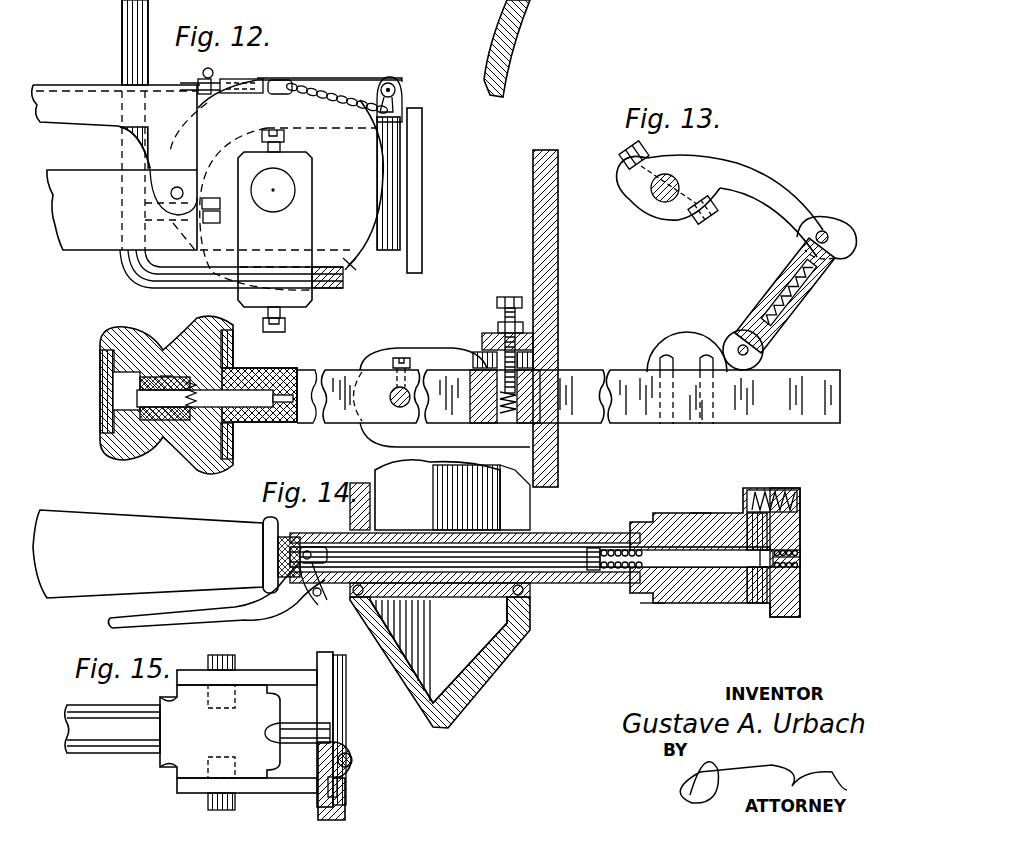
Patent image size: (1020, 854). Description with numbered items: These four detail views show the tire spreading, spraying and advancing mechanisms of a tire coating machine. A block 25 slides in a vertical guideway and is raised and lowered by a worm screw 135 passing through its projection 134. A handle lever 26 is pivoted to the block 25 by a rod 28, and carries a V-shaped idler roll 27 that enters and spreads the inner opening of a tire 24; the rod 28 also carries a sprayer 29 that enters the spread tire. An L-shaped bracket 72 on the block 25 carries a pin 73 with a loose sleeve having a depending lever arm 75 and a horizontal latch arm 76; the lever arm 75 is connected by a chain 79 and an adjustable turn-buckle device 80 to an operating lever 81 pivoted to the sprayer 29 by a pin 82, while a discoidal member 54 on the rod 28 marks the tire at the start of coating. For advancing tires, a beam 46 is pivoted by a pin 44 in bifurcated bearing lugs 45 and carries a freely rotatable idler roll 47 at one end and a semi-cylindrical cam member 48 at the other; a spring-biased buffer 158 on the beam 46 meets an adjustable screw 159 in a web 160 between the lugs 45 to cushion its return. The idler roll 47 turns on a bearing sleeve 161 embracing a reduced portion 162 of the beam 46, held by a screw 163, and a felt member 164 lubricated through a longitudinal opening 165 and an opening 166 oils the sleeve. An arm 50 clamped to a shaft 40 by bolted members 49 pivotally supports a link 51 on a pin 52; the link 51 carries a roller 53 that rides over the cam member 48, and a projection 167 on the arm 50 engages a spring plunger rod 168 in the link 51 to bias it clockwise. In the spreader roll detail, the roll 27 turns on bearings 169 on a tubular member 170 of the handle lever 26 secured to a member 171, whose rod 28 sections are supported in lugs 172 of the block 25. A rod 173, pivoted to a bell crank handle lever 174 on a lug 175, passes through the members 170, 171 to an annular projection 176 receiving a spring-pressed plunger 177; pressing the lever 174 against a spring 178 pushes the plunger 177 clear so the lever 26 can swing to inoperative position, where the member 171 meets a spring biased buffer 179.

In FIG. 12, the operating lever 81 is at (82, 85).
In FIG. 12, the sprayer 29 is at (70, 168).
In FIG. 12, the pin 82 is at (170, 193).
In FIG. 12, the rod 28 is at (290, 190).
In FIG. 14, the rod 28 is at (702, 512).
In FIG. 15, the rod 28 is at (235, 661).
In FIG. 12, the block 25 is at (400, 175).
In FIG. 14, the block 25 is at (802, 606).
In FIG. 15, the block 25 is at (280, 680).
In FIG. 12, the bracket 72 is at (400, 118).
In FIG. 12, the pin 73 is at (392, 84).
In FIG. 12, the lever arm 75 is at (378, 92).
In FIG. 12, the latch arm 76 is at (318, 80).
In FIG. 12, the chain 79 is at (323, 100).
In FIG. 12, the turn-buckle device 80 is at (240, 79).
In FIG. 12, the discoidal member 54 is at (352, 266).
In FIG. 12, the tire 24 is at (527, 33).
In FIG. 13, the beam 46 is at (340, 375).
In FIG. 13, the bearing lugs 45 is at (426, 356).
In FIG. 13, the pin 44 is at (390, 397).
In FIG. 13, the web 160 is at (497, 303).
In FIG. 13, the spring-biased buffer 158 is at (500, 352).
In FIG. 13, the adjustable screw 159 is at (495, 298).
In FIG. 13, the cam member 48 is at (668, 346).
In FIG. 13, the roller 53 is at (731, 343).
In FIG. 13, the link 51 is at (790, 295).
In FIG. 13, the spring plunger rod 168 is at (806, 278).
In FIG. 13, the projection 167 is at (841, 256).
In FIG. 13, the pin 52 is at (830, 232).
In FIG. 13, the arm 50 is at (762, 166).
In FIG. 13, the shaft 40 is at (655, 205).
In FIG. 13, the bolted members 49 is at (622, 158).
In FIG. 13, the idler roll 47 is at (100, 346).
In FIG. 13, the longitudinal opening 165 is at (236, 390).
In FIG. 13, the screw 163 is at (125, 406).
In FIG. 13, the opening 166 is at (270, 372).
In FIG. 13, the bearing sleeve 161 is at (172, 410).
In FIG. 13, the felt member 164 is at (190, 408).
In FIG. 13, the reduced portion 162 is at (167, 376).
In FIG. 14, the handle lever 26 is at (85, 512).
In FIG. 14, the bell crank handle lever 174 is at (112, 621).
In FIG. 14, the lug 175 is at (325, 607).
In FIG. 14, the tubular member 170 is at (562, 534).
In FIG. 15, the tubular member 170 is at (110, 753).
In FIG. 14, the rod 173 is at (465, 567).
In FIG. 14, the idler roll 27 is at (462, 697).
In FIG. 14, the bearings 169 is at (525, 593).
In FIG. 14, the member 171 is at (655, 513).
In FIG. 15, the member 171 is at (178, 772).
In FIG. 14, the spring biased buffer 179 is at (746, 492).
In FIG. 15, the spring biased buffer 179 is at (266, 735).
In FIG. 14, the annular projection 176 is at (758, 605).
In FIG. 14, the lugs 172 is at (653, 605).
In FIG. 15, the lugs 172 is at (191, 670).
In FIG. 14, the spring 178 is at (612, 572).
In FIG. 14, the spring-pressed plunger 177 is at (802, 560).
In FIG. 15, the projection 134 is at (358, 752).
In FIG. 15, the worm screw 135 is at (362, 778).